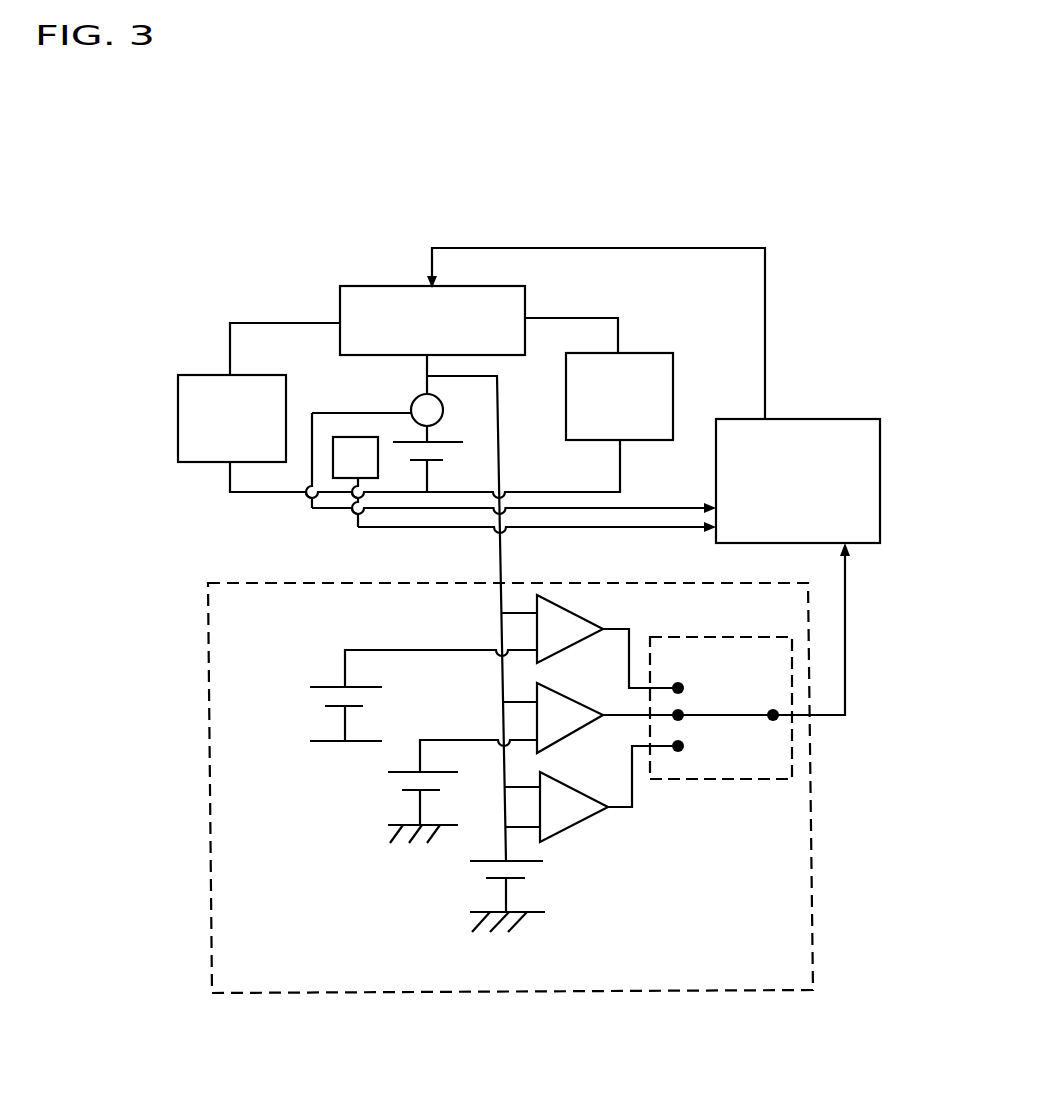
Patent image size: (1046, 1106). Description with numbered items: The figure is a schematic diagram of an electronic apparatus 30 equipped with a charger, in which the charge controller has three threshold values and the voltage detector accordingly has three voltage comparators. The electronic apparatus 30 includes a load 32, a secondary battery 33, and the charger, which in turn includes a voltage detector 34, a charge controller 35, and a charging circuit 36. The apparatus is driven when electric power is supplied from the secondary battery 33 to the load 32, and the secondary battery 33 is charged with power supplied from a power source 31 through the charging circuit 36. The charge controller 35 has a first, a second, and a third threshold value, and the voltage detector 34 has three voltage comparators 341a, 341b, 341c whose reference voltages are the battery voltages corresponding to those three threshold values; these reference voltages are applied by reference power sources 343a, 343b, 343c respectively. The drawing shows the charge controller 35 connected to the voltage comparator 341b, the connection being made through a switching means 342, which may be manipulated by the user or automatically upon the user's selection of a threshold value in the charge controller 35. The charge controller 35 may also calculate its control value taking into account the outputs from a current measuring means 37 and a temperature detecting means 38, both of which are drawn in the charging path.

The electronic apparatus 30 is at (752, 125).
The power source 31 is at (215, 385).
The load 32 is at (655, 370).
The secondary battery 33 is at (440, 455).
The voltage detector 34 is at (400, 993).
The charge controller 35 is at (818, 440).
The charging circuit 36 is at (372, 295).
The current measuring means 37 is at (413, 400).
The temperature detecting means 38 is at (340, 440).
The voltage comparator 341a is at (575, 625).
The voltage comparator 341b is at (566, 712).
The voltage comparator 341c is at (576, 800).
The switching means 342 is at (728, 780).
The reference power source 343a is at (366, 698).
The reference power source 343b is at (440, 785).
The reference power source 343c is at (530, 870).